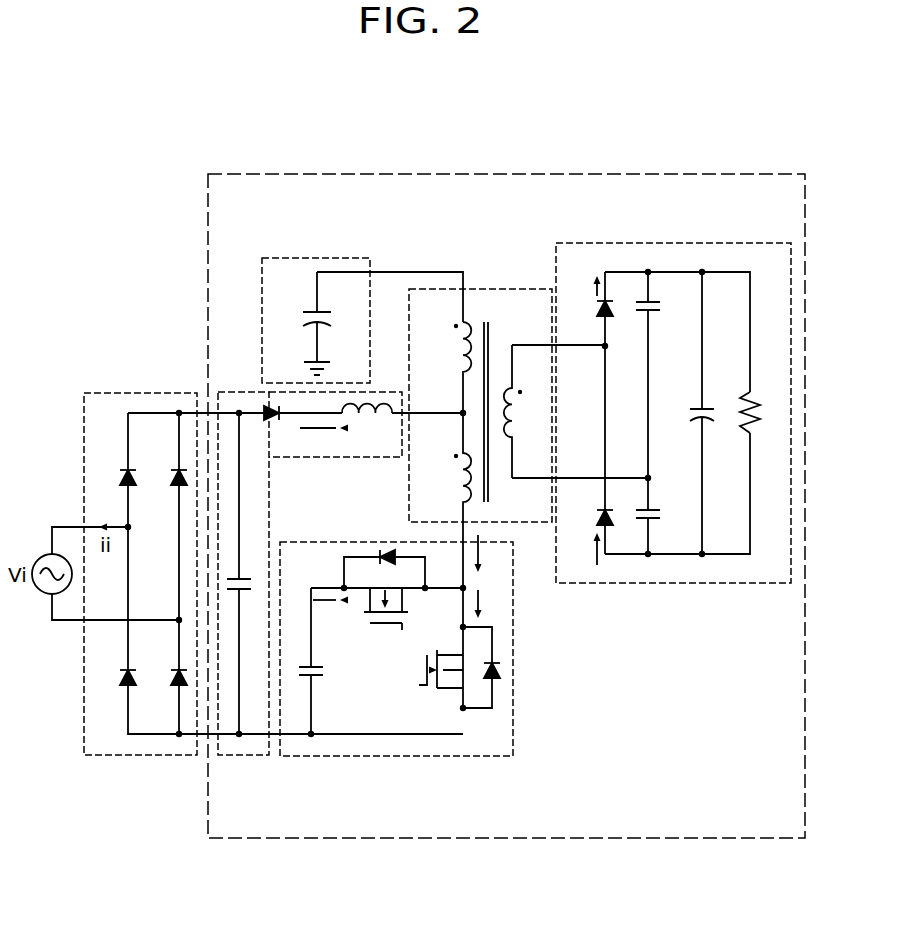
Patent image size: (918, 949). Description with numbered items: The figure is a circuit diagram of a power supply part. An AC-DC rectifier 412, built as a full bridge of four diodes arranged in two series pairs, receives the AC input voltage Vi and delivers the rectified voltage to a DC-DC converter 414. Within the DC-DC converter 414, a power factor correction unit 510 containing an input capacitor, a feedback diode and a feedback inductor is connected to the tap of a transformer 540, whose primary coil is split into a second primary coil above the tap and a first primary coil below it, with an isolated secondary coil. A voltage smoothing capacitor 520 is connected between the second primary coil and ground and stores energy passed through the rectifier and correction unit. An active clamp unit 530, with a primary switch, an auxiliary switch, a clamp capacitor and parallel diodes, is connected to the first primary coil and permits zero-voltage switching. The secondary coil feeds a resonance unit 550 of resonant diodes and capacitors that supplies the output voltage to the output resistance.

The AC-DC rectifier 412 is at (135, 755).
The DC-DC converter 414 is at (531, 838).
The power factor correction unit 510 is at (245, 755).
The voltage smoothing capacitor 520 is at (312, 258).
The active clamp unit 530 is at (375, 756).
The transformer 540 is at (502, 288).
The resonance unit 550 is at (674, 243).